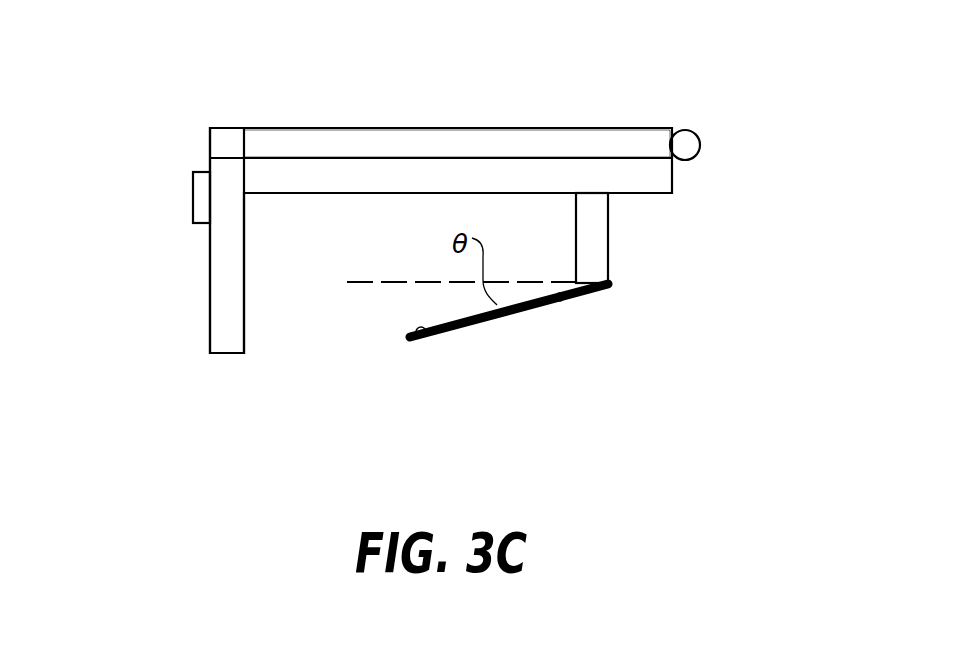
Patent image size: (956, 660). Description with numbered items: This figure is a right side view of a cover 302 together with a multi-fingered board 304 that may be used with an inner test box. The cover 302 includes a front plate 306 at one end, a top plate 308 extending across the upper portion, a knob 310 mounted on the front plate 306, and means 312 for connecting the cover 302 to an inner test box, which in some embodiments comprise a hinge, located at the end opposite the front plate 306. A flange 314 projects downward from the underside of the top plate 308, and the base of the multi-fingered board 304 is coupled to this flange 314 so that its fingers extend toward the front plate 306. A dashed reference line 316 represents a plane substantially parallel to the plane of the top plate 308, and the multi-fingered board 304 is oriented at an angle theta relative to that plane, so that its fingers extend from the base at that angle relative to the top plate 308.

The cover 302 is at (342, 128).
The multi-fingered board 304 is at (477, 323).
The front plate 306 is at (228, 145).
The top plate 308 is at (430, 142).
The knob 310 is at (193, 195).
The means for connecting the cover to an inner test box 312 is at (684, 130).
The flange 314 is at (610, 232).
The reference line 316 is at (399, 281).